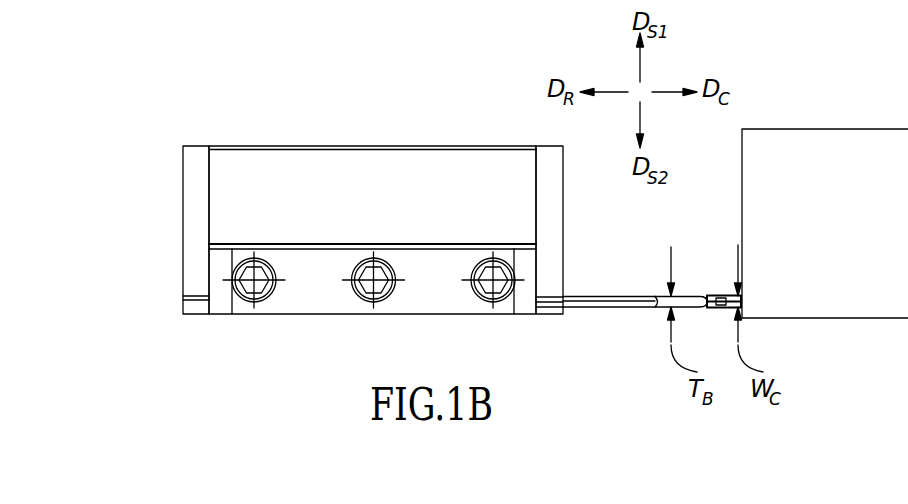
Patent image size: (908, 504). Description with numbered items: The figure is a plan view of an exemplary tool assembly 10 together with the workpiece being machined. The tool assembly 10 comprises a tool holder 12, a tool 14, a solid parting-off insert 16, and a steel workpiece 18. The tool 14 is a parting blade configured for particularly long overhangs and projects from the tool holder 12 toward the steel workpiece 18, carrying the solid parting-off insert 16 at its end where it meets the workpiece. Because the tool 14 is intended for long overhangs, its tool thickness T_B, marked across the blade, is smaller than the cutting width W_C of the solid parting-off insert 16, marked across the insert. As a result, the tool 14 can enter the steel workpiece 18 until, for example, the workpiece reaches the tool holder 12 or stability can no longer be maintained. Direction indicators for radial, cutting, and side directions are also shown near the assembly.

The tool assembly 10 is at (216, 112).
The tool holder 12 is at (549, 198).
The tool 14 is at (617, 298).
The solid parting-off insert 16 is at (722, 298).
The steel workpiece 18 is at (800, 136).